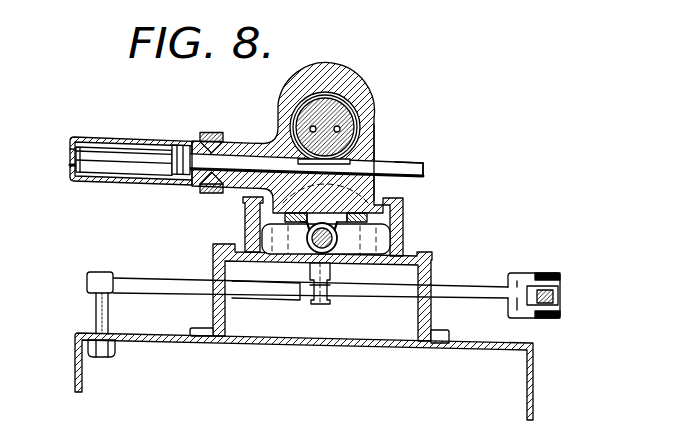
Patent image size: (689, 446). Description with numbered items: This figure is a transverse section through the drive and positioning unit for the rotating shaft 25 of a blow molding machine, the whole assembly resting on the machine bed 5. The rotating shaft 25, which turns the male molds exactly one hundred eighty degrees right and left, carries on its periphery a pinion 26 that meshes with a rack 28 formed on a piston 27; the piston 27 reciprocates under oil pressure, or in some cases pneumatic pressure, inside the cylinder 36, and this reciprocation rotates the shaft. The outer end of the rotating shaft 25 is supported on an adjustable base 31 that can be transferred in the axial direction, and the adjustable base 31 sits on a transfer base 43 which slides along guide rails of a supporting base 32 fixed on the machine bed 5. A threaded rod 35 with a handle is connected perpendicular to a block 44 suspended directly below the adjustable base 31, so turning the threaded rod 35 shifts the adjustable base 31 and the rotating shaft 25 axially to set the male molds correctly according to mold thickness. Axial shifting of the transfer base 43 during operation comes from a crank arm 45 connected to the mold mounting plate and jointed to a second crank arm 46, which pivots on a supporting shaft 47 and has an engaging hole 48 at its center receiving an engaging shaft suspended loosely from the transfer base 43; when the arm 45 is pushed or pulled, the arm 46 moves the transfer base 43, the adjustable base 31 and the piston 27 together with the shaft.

The machine bed 5 is at (74, 368).
The rotating shaft 25 is at (302, 102).
The pinion 26 is at (350, 104).
The piston 27 is at (240, 158).
The rack 28 is at (412, 170).
The adjustable base 31 is at (373, 147).
The supporting base 32 is at (440, 316).
The threaded rod 35 is at (393, 228).
The cylinder 36 is at (112, 138).
The transfer base 43 is at (247, 221).
The block 44 is at (338, 232).
The crank arm 45 is at (558, 298).
The crank arm 46 is at (468, 290).
The supporting shaft 47 is at (96, 303).
The engaging hole 48 is at (318, 305).